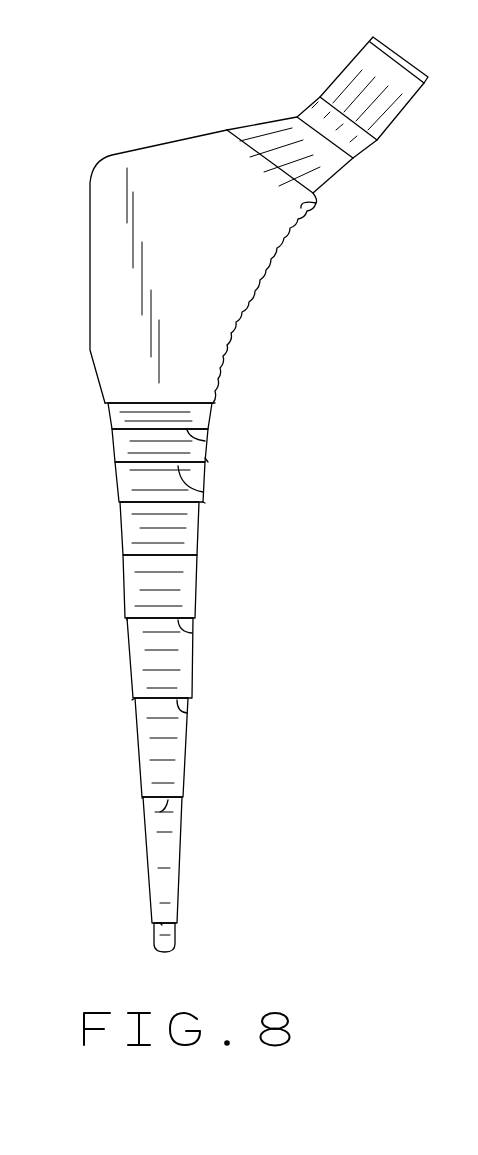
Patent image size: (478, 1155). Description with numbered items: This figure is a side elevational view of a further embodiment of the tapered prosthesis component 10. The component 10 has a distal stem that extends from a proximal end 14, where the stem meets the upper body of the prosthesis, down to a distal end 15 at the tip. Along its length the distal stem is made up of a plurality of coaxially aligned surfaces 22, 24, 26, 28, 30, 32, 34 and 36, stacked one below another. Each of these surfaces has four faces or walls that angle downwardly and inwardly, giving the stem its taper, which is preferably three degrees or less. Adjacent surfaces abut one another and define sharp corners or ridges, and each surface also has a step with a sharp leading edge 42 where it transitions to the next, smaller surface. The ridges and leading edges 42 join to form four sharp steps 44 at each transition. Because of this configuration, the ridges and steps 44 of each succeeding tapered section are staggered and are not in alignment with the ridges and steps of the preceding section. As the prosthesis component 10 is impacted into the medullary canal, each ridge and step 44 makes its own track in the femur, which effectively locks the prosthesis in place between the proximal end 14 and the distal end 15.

The tapered prosthesis component 10 is at (217, 110).
The proximal end 14 is at (222, 403).
The distal end 15 is at (170, 953).
The coaxially aligned surface 22 is at (118, 413).
The coaxially aligned surface 24 is at (130, 440).
The coaxially aligned surface 26 is at (133, 478).
The coaxially aligned surface 28 is at (143, 527).
The coaxially aligned surface 30 is at (162, 590).
The coaxially aligned surface 32 is at (165, 657).
The coaxially aligned surface 34 is at (162, 765).
The eighth stem segment 36 is at (163, 877).
The sharp leading edge 42 is at (125, 466).
The sharp step 44 is at (205, 458).